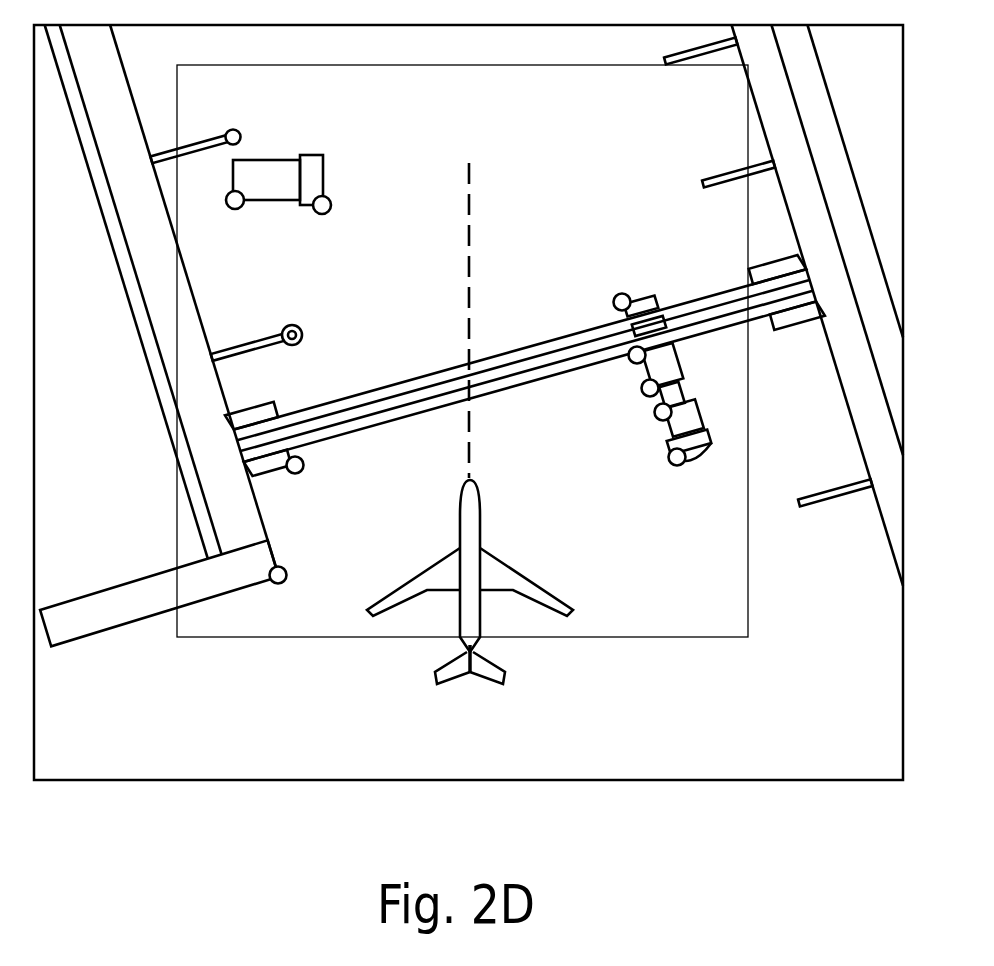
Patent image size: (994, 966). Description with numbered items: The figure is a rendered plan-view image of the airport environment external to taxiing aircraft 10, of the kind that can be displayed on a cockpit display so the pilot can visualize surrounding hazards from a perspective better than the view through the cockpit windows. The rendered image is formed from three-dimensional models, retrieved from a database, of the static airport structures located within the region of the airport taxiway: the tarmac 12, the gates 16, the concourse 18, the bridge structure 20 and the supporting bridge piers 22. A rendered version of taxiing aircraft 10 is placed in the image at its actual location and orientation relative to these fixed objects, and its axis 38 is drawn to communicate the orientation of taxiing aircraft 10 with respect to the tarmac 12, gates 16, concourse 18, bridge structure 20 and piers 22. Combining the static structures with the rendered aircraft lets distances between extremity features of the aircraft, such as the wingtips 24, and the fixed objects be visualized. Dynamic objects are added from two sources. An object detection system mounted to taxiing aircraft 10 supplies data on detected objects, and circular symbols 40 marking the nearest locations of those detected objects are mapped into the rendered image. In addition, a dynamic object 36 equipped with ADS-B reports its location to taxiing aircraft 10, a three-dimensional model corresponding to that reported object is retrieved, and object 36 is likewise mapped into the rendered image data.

The taxiing aircraft 10 is at (476, 590).
The tarmac 12 is at (689, 715).
The gates 16 is at (240, 136).
The concourse 18 is at (160, 284).
The bridge structure 20 is at (697, 300).
The supporting bridge piers 22 is at (349, 398).
The wingtips 24 is at (368, 616).
The ADS-B equipped dynamic object 36 is at (325, 174).
The axis 38 is at (472, 208).
The symbols 40 is at (320, 213).